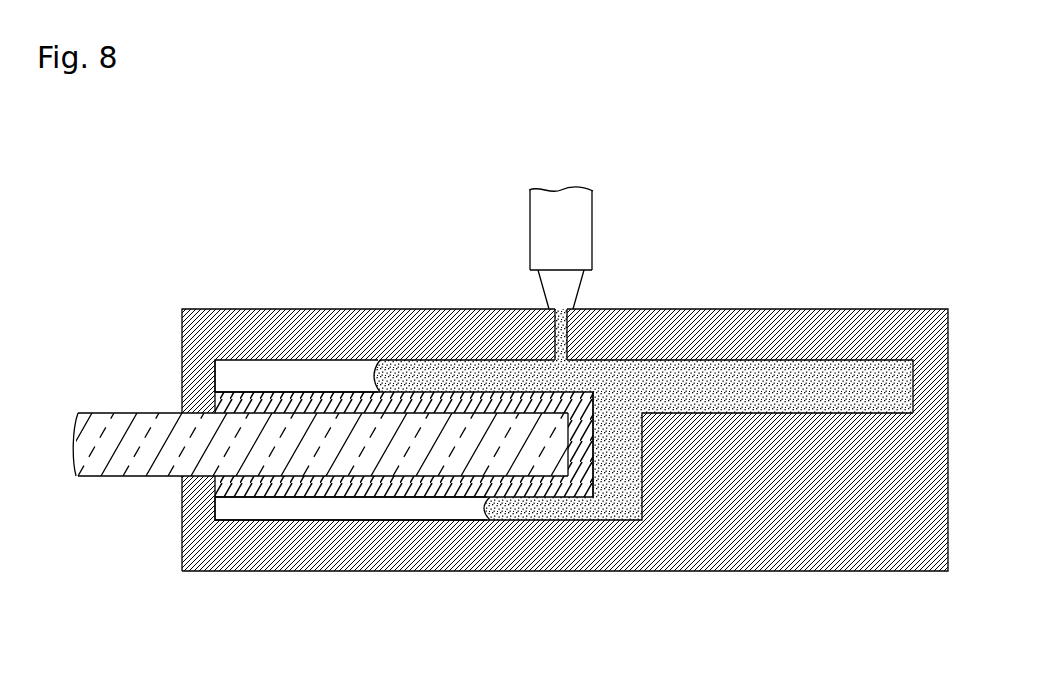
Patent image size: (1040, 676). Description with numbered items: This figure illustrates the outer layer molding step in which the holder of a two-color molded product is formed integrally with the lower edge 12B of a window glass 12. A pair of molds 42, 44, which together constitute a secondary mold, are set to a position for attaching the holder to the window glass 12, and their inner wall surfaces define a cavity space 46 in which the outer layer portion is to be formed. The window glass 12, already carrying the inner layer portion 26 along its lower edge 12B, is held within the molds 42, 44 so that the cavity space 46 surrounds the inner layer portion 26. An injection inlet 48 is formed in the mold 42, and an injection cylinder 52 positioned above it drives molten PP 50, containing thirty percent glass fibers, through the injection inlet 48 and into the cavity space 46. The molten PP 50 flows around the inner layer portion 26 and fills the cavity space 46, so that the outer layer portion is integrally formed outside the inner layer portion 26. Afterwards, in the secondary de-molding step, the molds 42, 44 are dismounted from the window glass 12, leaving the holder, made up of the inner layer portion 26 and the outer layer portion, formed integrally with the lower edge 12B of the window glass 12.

The window glass 12 is at (156, 408).
The lower edge of the window glass 12B is at (573, 447).
The inner layer portion 26 is at (338, 400).
The mold 42 is at (781, 309).
The mold 44 is at (781, 571).
The cavity space 46 is at (257, 372).
The injection inlet 48 is at (563, 331).
The molten PP 50 is at (455, 375).
The injection cylinder 52 is at (586, 228).